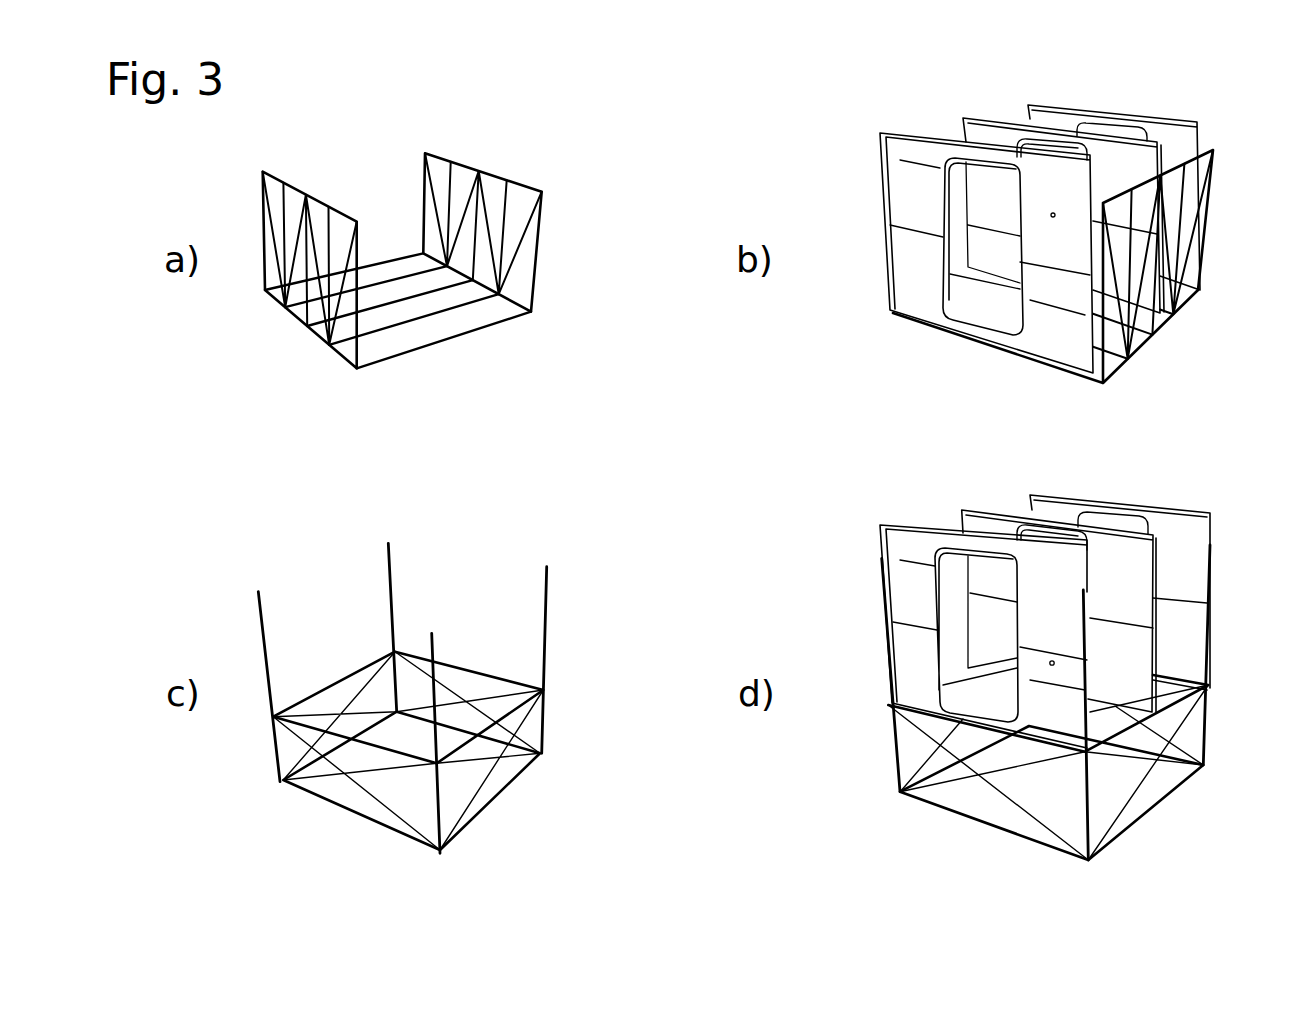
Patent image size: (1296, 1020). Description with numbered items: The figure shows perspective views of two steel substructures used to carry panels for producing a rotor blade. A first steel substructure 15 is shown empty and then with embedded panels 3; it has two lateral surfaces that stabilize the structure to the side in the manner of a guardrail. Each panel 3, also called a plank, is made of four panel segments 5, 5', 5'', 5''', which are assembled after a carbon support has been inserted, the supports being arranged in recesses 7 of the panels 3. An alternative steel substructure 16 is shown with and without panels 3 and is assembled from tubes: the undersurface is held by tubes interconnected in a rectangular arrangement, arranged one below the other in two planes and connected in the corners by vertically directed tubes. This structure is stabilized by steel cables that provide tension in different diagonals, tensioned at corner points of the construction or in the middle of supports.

In FIG. 3b, the panel 3 is at (1062, 109).
In FIG. 3d, the panel 3 is at (1183, 510).
In FIG. 3b, the panel segment 5 is at (1031, 305).
In FIG. 3d, the panel segment 5 is at (1004, 754).
In FIG. 3b, the panel segment 5' is at (892, 288).
In FIG. 3d, the panel segment 5' is at (880, 634).
In FIG. 3b, the panel segment 5'' is at (880, 153).
In FIG. 3d, the panel segment 5'' is at (879, 584).
In FIG. 3b, the panel segment 5''' is at (1050, 320).
In FIG. 3d, the panel segment 5''' is at (1125, 743).
In FIG. 3b, the recess 7 is at (980, 317).
In FIG. 3d, the recess 7 is at (980, 718).
In FIG. 3a, the steel substructure 15 is at (502, 152).
In FIG. 3b, the steel substructure 15 is at (1213, 207).
In FIG. 3c, the steel substructure 16 is at (487, 565).
In FIG. 3d, the steel substructure 16 is at (1212, 707).